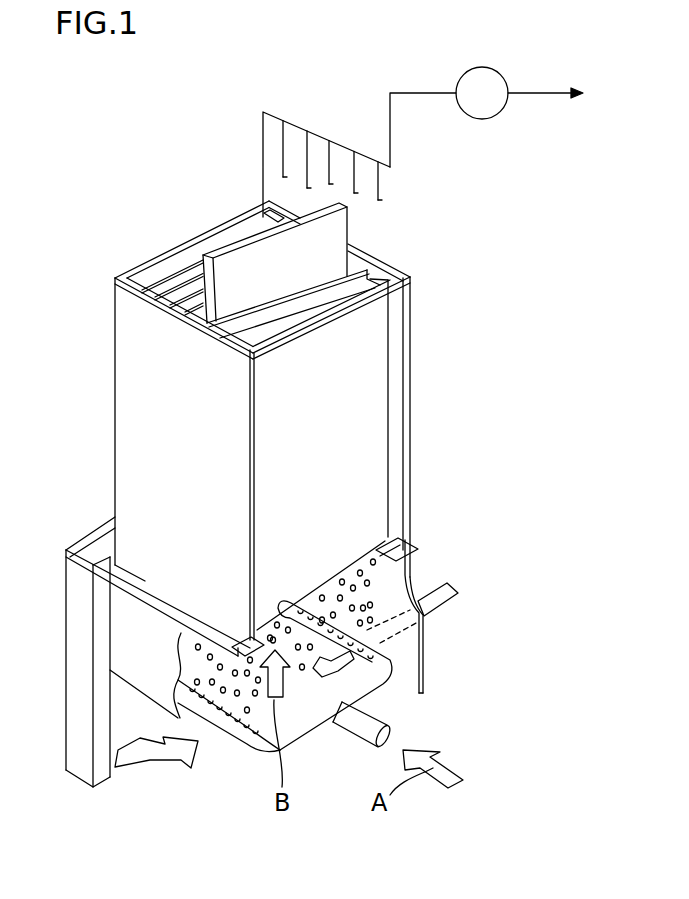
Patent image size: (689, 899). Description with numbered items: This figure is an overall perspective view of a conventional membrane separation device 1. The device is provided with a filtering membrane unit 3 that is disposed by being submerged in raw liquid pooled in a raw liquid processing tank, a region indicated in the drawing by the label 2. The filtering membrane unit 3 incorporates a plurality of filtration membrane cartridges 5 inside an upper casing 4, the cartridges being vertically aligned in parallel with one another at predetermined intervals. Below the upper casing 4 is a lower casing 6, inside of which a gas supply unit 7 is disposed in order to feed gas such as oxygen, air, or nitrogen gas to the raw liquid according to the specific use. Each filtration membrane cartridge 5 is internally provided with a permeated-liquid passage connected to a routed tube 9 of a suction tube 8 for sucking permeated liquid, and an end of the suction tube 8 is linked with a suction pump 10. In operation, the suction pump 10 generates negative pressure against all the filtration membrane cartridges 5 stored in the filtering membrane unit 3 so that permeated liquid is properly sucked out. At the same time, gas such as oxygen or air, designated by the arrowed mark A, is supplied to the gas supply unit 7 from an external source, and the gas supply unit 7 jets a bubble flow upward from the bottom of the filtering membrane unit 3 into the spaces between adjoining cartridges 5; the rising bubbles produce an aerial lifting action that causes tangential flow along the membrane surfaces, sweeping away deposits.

The membrane separation device 1 is at (421, 386).
The treatment chamber 2 is at (451, 472).
The filtering membrane unit 3 is at (162, 260).
The upper casing 4 is at (148, 475).
The filtration membrane cartridges 5 is at (193, 263).
The lower casing 6 is at (122, 643).
The gas supply unit 7 is at (367, 690).
The suction tube 8 is at (416, 92).
The routed tube 9 is at (307, 143).
The suction pump 10 is at (497, 69).